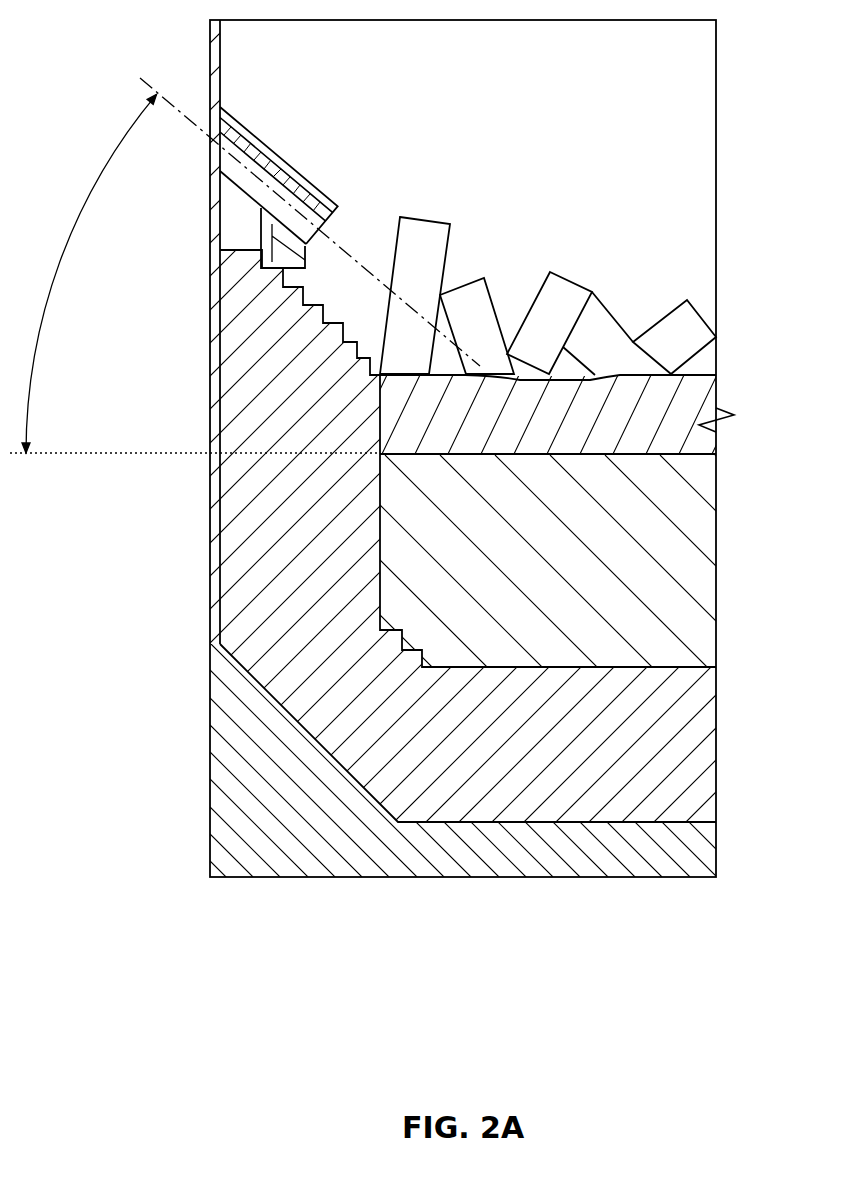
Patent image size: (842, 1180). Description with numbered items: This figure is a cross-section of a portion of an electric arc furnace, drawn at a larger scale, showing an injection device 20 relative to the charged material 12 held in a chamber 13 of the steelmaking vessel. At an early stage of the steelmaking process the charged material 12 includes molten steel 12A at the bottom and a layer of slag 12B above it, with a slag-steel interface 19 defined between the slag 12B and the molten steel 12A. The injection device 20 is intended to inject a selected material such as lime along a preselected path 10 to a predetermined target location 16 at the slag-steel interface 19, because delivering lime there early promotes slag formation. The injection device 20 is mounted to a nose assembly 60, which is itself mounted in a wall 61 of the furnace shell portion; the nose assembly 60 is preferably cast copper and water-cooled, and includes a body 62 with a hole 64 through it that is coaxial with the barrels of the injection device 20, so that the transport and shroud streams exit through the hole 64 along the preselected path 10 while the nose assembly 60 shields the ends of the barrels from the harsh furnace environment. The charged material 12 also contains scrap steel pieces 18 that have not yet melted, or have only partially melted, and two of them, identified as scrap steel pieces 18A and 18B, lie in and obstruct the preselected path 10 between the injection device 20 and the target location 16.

The preselected path 10 is at (463, 448).
The charged material 12 is at (708, 296).
The molten steel 12A is at (700, 627).
The slag 12B is at (718, 380).
The chamber 13 is at (592, 123).
The predetermined target location 16 is at (585, 456).
The scrap steel pieces 18 is at (581, 286).
The scrap steel piece 18A is at (437, 230).
The scrap steel piece 18B is at (496, 287).
The slag-steel interface 19 is at (717, 454).
The injection device 20 is at (190, 74).
The nose assembly 60 is at (257, 127).
The wall 61 is at (223, 40).
The body 62 is at (235, 197).
The hole 64 is at (298, 173).